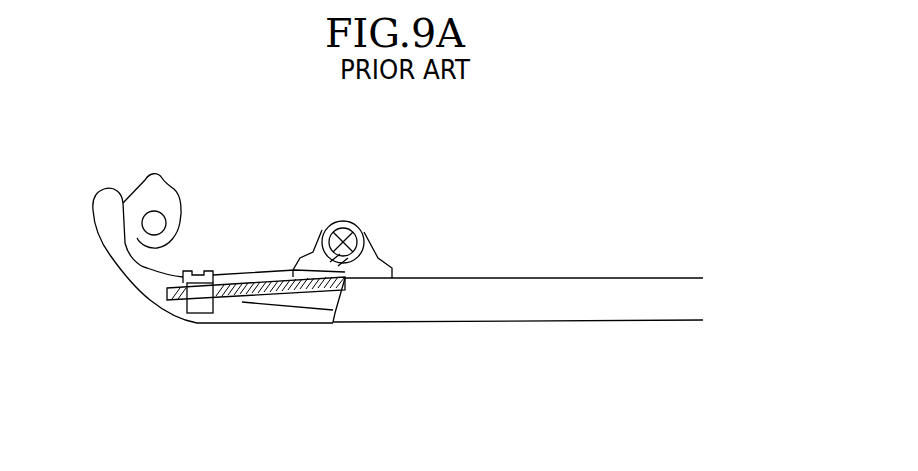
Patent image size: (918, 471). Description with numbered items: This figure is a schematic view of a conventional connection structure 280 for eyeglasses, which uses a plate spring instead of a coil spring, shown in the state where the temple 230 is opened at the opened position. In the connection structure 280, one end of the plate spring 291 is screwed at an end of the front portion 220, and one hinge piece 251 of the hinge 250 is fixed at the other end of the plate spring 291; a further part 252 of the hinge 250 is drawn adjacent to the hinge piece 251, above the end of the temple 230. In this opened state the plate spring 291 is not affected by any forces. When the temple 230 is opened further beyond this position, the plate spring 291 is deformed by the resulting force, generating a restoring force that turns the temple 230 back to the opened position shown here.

The front portion 220 is at (117, 255).
The temple 230 is at (566, 312).
The hinge 250 is at (407, 208).
The hinge piece 251 is at (328, 222).
The bracket 252 is at (385, 262).
The connection structure 280 is at (627, 205).
The plate spring 291 is at (263, 277).